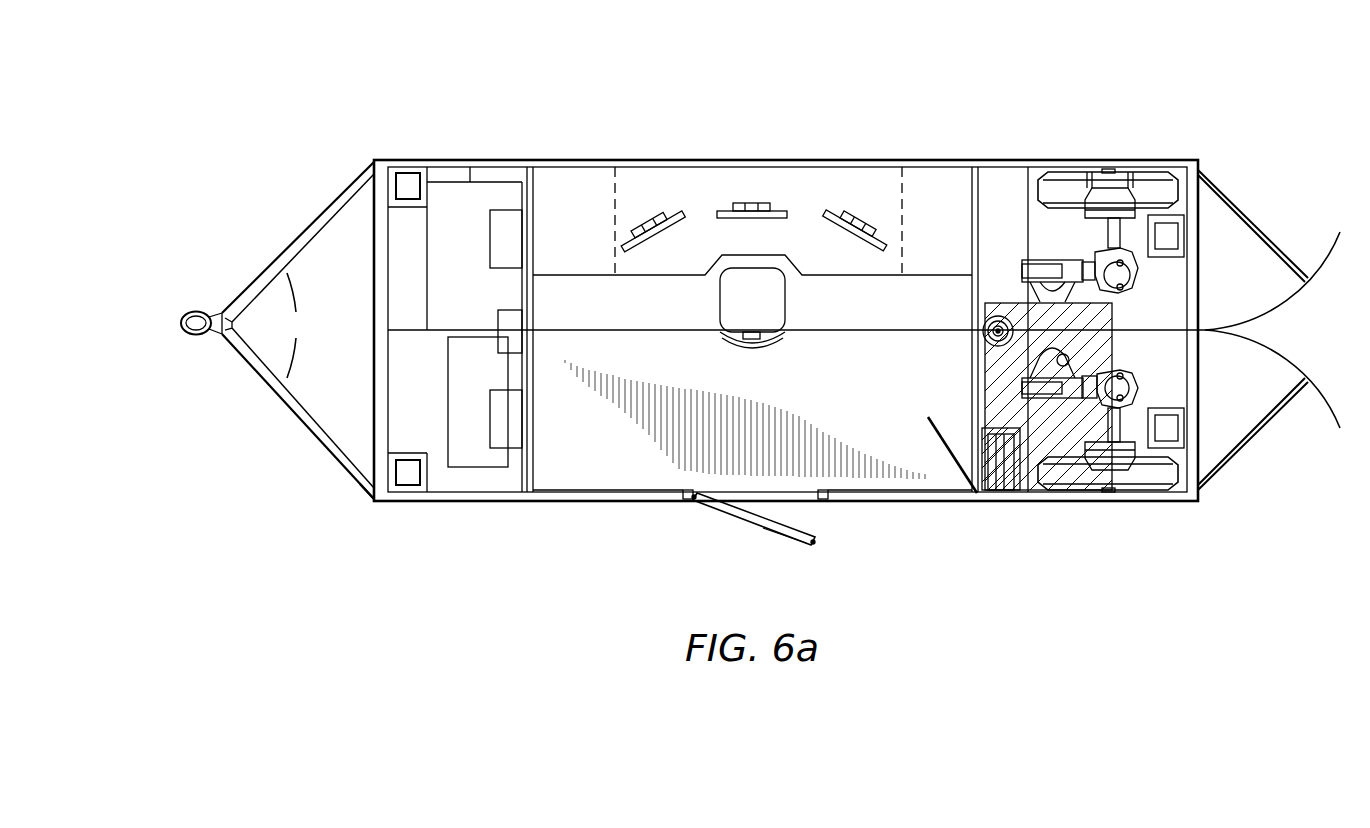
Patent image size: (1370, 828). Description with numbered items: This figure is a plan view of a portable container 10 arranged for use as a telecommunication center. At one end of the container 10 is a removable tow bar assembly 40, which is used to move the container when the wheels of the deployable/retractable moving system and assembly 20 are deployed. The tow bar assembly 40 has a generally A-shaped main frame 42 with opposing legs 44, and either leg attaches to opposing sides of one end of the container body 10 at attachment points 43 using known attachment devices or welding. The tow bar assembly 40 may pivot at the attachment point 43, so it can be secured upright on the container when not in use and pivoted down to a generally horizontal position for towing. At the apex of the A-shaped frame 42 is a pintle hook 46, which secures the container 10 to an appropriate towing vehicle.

The portable container 10 is at (790, 128).
The deployable/retractable moving system and assembly 20 is at (1108, 506).
The tow bar assembly 40 is at (179, 292).
The A-shaped main frame 42 is at (244, 276).
The attachment points 43 is at (366, 485).
The opposing legs 44 is at (296, 325).
The pintle hook 46 is at (179, 324).